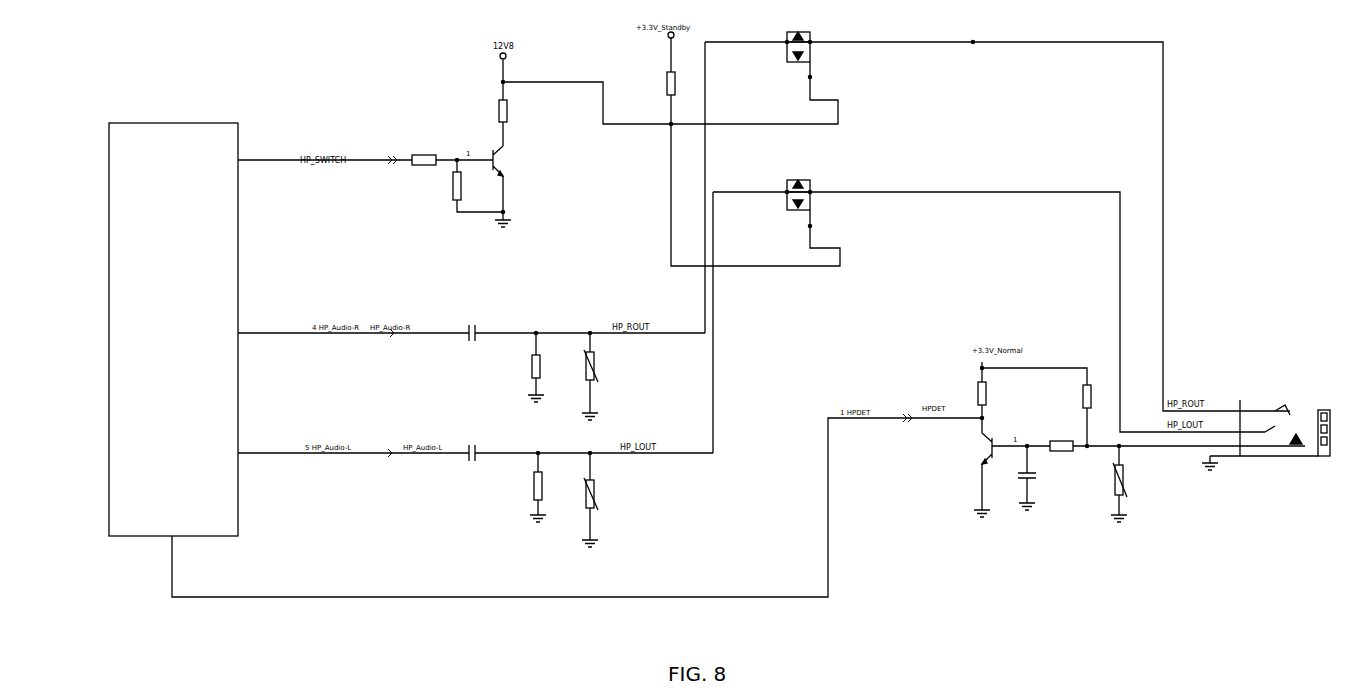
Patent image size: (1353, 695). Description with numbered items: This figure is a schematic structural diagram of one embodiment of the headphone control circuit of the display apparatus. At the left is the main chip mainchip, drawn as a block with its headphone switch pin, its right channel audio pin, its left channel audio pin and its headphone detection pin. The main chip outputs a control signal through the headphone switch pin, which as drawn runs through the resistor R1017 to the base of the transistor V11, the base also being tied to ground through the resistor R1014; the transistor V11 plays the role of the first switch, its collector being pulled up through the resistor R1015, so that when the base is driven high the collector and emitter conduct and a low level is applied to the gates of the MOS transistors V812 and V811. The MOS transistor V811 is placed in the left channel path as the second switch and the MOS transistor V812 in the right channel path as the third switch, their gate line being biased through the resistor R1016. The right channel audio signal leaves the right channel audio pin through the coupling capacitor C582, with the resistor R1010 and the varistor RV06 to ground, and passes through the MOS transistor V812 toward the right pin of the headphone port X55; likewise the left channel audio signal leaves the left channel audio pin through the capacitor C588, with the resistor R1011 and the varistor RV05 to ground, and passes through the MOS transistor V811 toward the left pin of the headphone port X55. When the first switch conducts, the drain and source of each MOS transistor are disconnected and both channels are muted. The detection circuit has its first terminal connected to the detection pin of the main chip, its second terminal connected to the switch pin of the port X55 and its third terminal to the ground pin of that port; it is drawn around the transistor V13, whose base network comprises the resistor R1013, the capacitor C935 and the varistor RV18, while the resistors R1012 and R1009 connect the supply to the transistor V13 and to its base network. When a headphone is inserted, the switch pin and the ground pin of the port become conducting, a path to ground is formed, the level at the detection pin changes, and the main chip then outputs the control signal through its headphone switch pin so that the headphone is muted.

The main chip mainchip is at (173, 329).
The resistor R1017 4.7k R1017 is at (423, 153).
The resistor R1014 47k R1014 is at (478, 186).
The transistor V11 MMBT3904LT1 V11 is at (530, 167).
The resistor R1015 4.7k R1015 is at (517, 93).
The resistor R1016 68k R1016 is at (686, 84).
The MOSFET V812 2N7002K V812 is at (792, 63).
The MOSFET V811 2N7002K V811 is at (788, 211).
The capacitor C582 22u/6.3V C582 is at (471, 319).
The resistor R1010 5k R1010 is at (555, 367).
The varistor RV06 is at (623, 376).
The capacitor C588 22u/6.3V C588 is at (471, 439).
The resistor R1011 5k R1011 is at (556, 487).
The varistor RV05 is at (623, 500).
The resistor R1012 4.7k R1012 is at (965, 393).
The resistor R1009 4.7k R1009 is at (1070, 396).
The transistor V13 MMBT3904LT1 V13 is at (950, 467).
The capacitor C935 100n/16V C935 is at (1042, 478).
The resistor R1013 4.7k R1013 is at (1057, 445).
The varistor RV18 is at (1150, 484).
The headphone connector X55 is at (1266, 430).